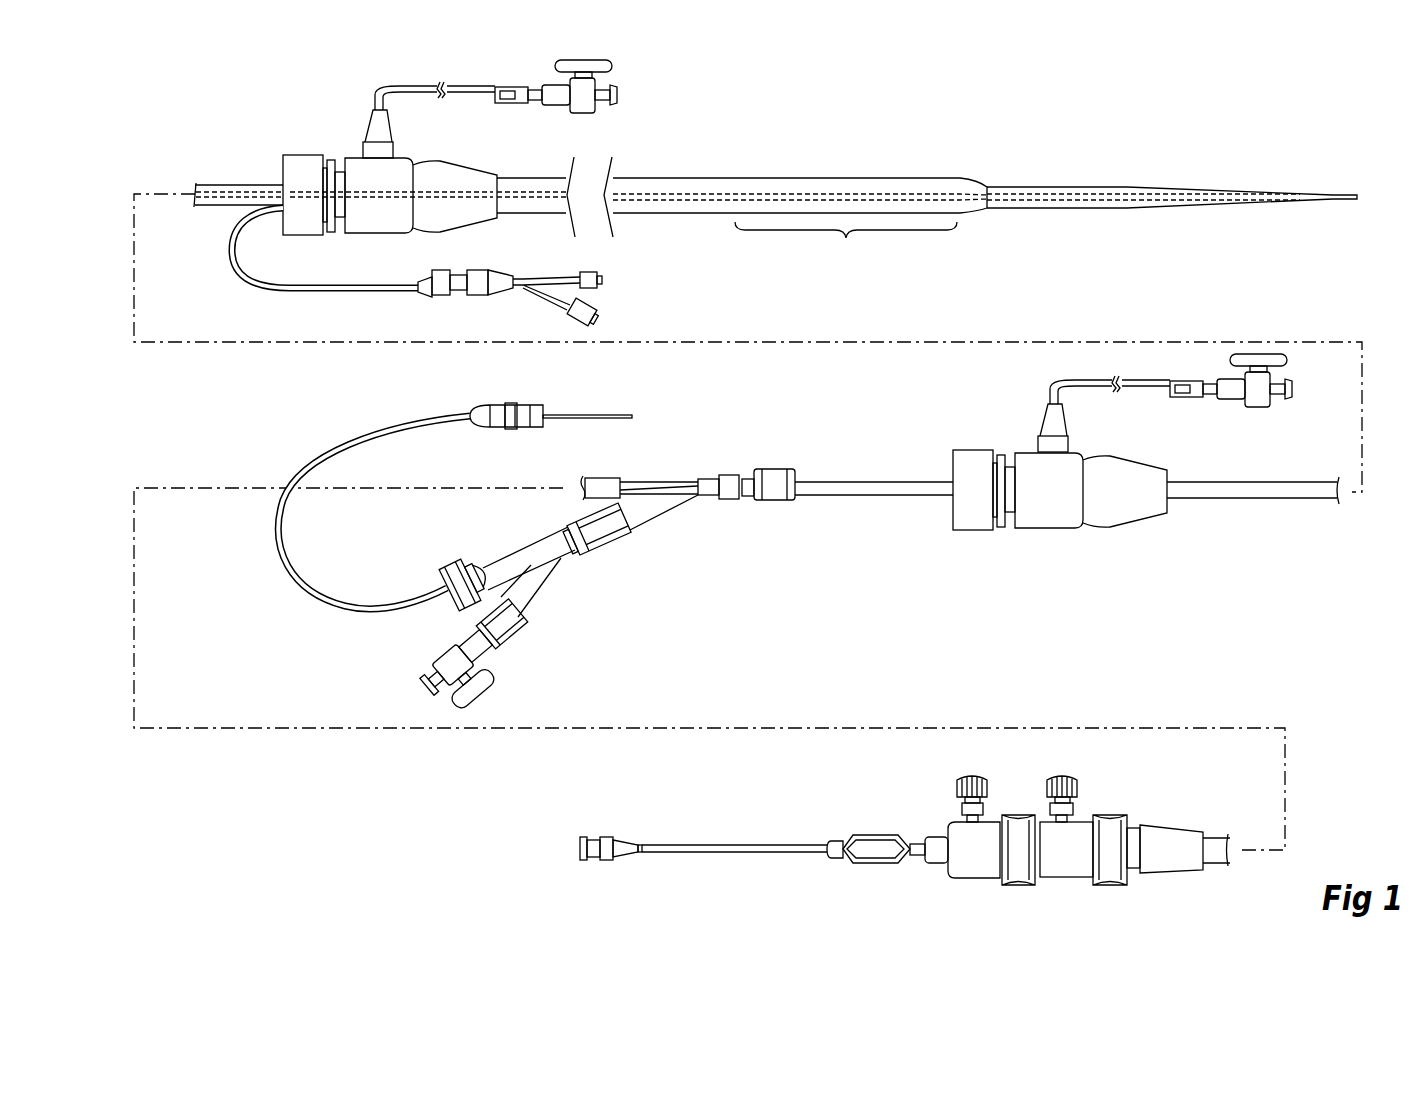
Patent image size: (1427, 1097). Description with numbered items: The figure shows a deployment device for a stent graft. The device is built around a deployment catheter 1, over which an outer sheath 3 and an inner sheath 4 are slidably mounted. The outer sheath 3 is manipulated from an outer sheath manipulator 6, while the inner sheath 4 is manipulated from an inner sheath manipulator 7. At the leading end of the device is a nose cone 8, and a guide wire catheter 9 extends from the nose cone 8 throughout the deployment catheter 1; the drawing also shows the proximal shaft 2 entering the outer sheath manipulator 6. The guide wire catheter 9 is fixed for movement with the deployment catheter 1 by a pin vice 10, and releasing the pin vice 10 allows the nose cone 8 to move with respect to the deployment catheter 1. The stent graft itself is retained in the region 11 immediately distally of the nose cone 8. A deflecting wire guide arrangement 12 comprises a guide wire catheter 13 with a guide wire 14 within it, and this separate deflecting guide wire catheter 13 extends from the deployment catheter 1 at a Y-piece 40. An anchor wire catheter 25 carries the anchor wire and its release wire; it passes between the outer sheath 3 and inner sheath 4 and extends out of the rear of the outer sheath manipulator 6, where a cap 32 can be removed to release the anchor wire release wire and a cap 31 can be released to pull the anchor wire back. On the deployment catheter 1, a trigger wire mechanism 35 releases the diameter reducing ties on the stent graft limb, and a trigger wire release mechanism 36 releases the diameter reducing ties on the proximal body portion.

The deployment catheter 1 is at (602, 485).
The proximal shaft / sheath 2 is at (228, 193).
The outer sheath 3 is at (713, 180).
The inner sheath 4 is at (1240, 492).
The outer sheath manipulator 6 is at (322, 151).
The inner sheath manipulator 7 is at (962, 540).
The nose cone 8 is at (1110, 190).
The guide wire catheter 9 is at (810, 200).
The pin vice 10 is at (878, 850).
The region 11 is at (846, 246).
The deflecting wire guide arrangement 12 is at (457, 402).
The guide wire catheter 13 is at (360, 442).
The guide wire 14 is at (578, 418).
The anchor wire catheter 25 is at (307, 289).
The cap 31 is at (597, 309).
The cap 32 is at (600, 280).
The trigger wire mechanism 35 is at (978, 860).
The trigger wire release mechanism 36 is at (1068, 863).
The Y-piece 40 is at (688, 518).